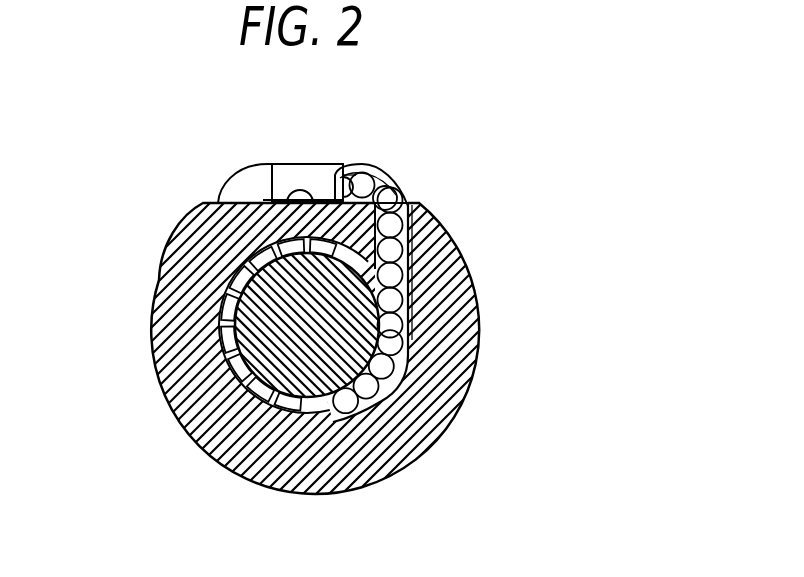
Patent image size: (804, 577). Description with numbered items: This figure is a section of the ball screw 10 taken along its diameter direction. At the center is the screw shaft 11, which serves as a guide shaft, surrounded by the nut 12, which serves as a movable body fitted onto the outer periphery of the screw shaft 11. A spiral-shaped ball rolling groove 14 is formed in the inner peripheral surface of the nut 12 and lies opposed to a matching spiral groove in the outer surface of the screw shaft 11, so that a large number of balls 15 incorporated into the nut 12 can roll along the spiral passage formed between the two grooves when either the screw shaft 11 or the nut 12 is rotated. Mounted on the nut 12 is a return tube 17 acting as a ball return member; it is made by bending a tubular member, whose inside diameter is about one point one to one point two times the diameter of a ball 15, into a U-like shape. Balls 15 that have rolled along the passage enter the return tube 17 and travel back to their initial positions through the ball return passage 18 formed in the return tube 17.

The ball screw 10 is at (402, 334).
The screw shaft 11 is at (250, 298).
The nut 12 is at (450, 252).
The ball rolling groove 14 is at (374, 393).
The balls 15 is at (343, 405).
The return tube 17 is at (378, 167).
The ball return passage 18 is at (402, 178).